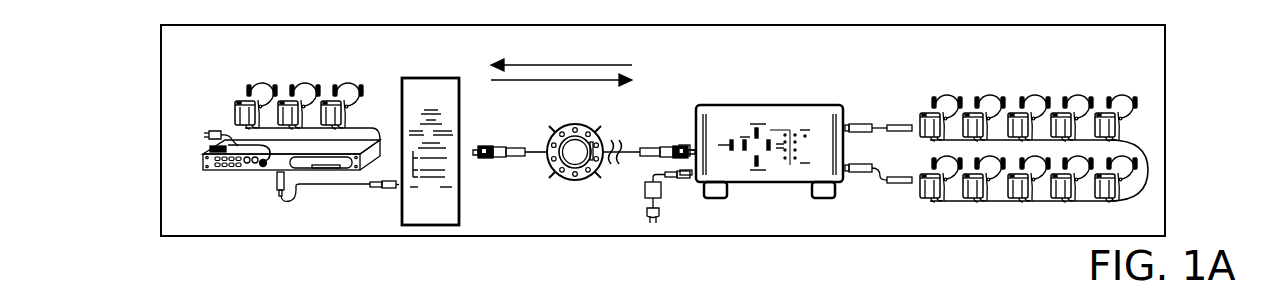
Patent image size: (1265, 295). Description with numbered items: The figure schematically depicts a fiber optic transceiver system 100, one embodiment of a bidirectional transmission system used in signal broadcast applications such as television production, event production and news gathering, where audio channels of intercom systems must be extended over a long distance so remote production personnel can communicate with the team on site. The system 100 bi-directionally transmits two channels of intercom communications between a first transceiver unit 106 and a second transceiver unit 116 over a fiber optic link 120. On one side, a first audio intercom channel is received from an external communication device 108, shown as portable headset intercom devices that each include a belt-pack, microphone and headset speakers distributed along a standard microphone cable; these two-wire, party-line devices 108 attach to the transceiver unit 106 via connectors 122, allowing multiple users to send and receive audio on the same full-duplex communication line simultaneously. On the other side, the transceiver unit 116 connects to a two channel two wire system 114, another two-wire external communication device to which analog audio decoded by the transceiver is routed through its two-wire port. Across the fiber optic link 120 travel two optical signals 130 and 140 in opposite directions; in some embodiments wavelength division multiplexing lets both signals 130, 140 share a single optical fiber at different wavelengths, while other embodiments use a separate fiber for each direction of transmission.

The fiber optic transceiver system 100 is at (96, 130).
The first transceiver unit 106 is at (787, 105).
The external communication device 108 is at (1047, 88).
The two channel two wire system 114 is at (203, 162).
The second transceiver unit 116 is at (460, 216).
The fiber optic link 120 is at (663, 140).
The connectors 122 is at (278, 182).
The optical signal 130 is at (559, 63).
The optical signal 140 is at (511, 84).